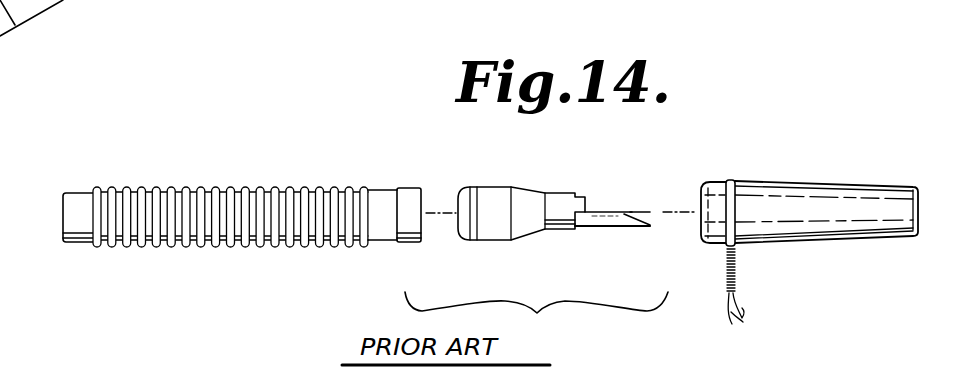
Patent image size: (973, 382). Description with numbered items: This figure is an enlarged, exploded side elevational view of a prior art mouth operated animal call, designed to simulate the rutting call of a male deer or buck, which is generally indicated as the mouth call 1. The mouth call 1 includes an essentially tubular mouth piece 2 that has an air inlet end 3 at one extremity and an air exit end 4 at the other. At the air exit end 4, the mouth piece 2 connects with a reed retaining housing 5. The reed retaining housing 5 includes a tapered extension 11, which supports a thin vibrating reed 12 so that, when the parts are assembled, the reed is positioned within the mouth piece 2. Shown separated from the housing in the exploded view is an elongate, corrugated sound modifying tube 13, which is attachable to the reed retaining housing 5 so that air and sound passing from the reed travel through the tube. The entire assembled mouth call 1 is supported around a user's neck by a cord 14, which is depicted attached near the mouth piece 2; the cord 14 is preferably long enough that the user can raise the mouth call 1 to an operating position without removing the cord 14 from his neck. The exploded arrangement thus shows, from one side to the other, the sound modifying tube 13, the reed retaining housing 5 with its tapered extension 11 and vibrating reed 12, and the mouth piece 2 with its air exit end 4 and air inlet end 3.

The mouth call 1 is at (802, 204).
The mouth piece 2 is at (802, 193).
The air inlet end 3 is at (920, 202).
The air exit end 4 is at (700, 185).
The reed retaining housing 5 is at (485, 192).
The tapered extension 11 is at (617, 222).
The vibrating reed 12 is at (652, 207).
The sound modifying tube 13 is at (310, 187).
The cord 14 is at (736, 313).